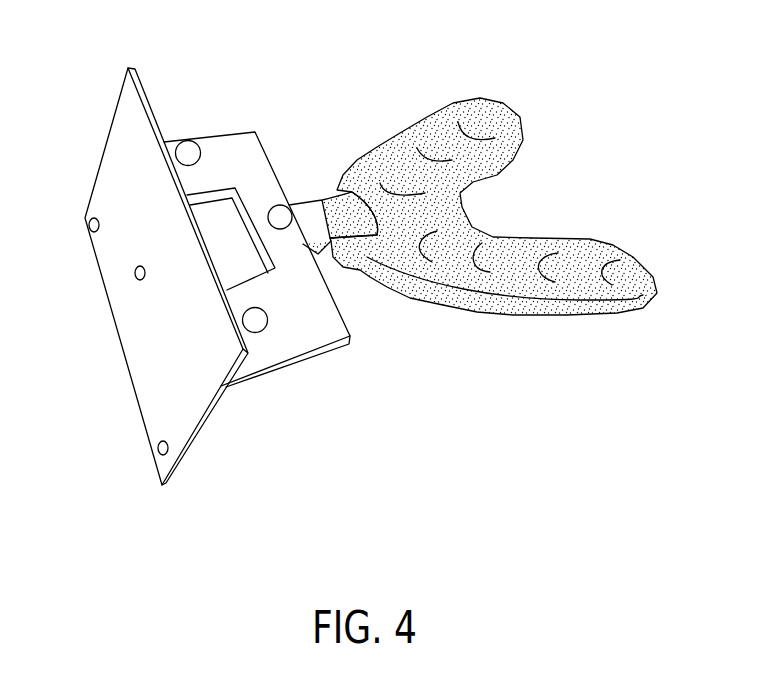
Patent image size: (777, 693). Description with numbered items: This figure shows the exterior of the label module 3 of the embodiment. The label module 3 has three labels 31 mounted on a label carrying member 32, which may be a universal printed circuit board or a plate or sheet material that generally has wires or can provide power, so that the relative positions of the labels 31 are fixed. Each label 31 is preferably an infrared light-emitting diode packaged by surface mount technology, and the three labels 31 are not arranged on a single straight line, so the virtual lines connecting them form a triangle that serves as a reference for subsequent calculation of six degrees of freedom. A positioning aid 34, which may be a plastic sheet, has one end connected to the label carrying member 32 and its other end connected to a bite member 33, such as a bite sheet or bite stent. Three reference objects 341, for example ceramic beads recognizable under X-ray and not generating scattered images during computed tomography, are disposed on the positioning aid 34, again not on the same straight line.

The label module 3 is at (169, 52).
The label 31 is at (90, 223).
The label carrying member 32 is at (148, 373).
The bite member 33 is at (433, 128).
The positioning aid 34 is at (234, 145).
The reference object 341 is at (188, 153).